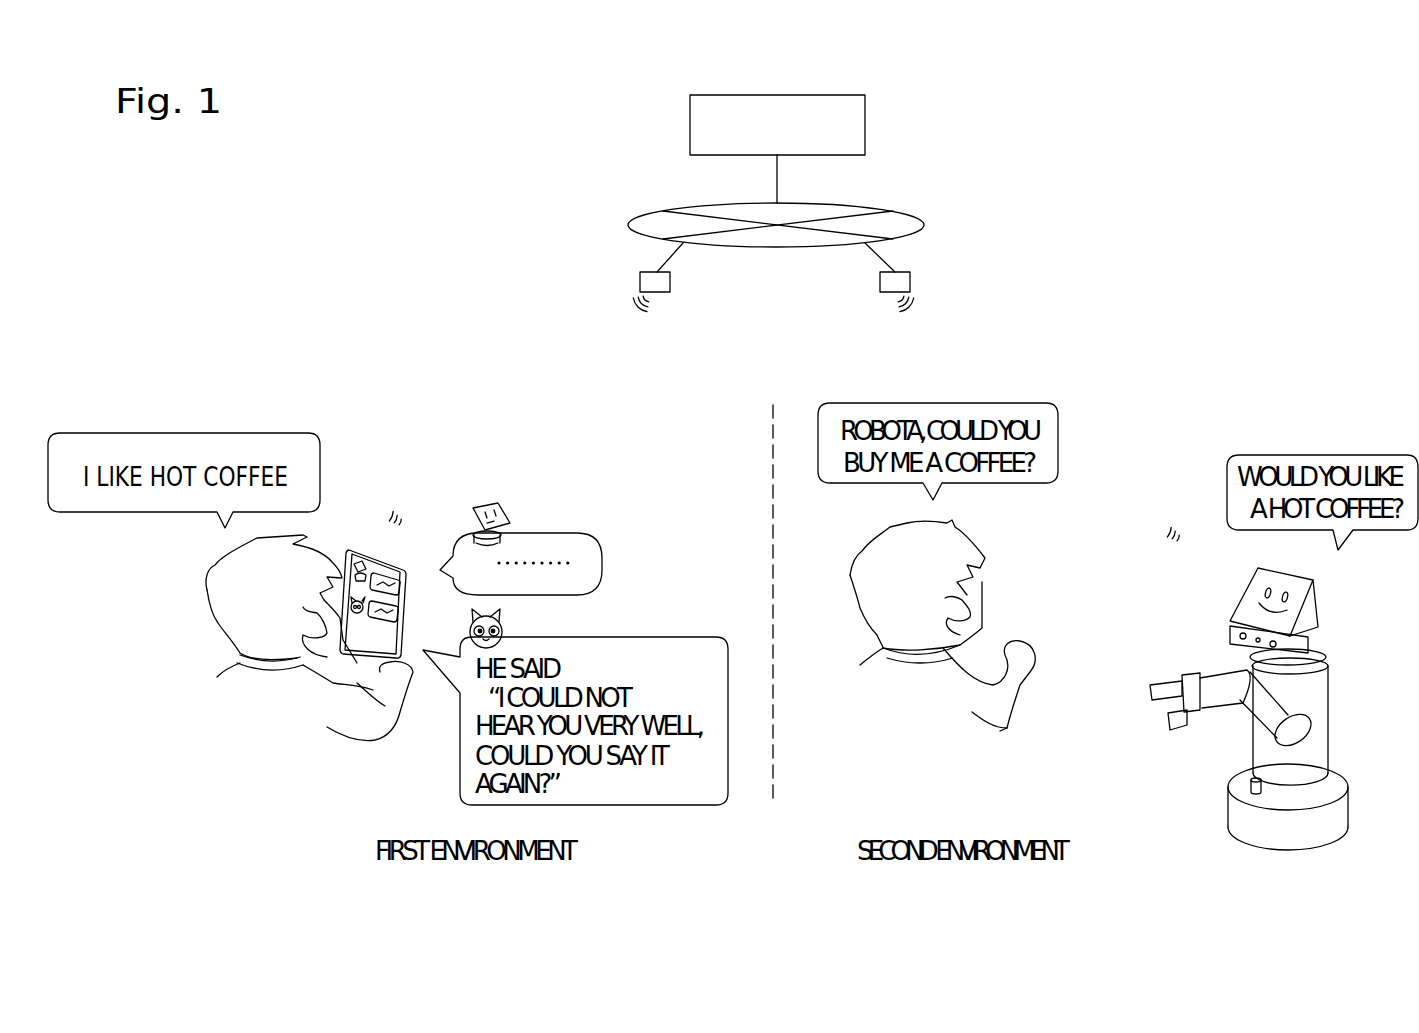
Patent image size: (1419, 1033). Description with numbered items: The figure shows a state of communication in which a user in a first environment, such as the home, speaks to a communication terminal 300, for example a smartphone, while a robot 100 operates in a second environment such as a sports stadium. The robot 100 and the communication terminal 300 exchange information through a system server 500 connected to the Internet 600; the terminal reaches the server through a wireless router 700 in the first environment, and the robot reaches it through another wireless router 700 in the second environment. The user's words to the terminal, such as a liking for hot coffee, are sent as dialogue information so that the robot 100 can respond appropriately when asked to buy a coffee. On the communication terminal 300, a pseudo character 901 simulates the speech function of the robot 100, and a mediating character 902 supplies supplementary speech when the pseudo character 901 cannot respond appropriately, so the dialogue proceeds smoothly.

The robot 100 is at (1186, 615).
The communication terminal 300 is at (357, 548).
The system server 500 is at (695, 95).
The Internet 600 is at (923, 225).
The wireless router 700 is at (640, 277).
The pseudo character 901 is at (507, 511).
The mediating character 902 is at (507, 630).